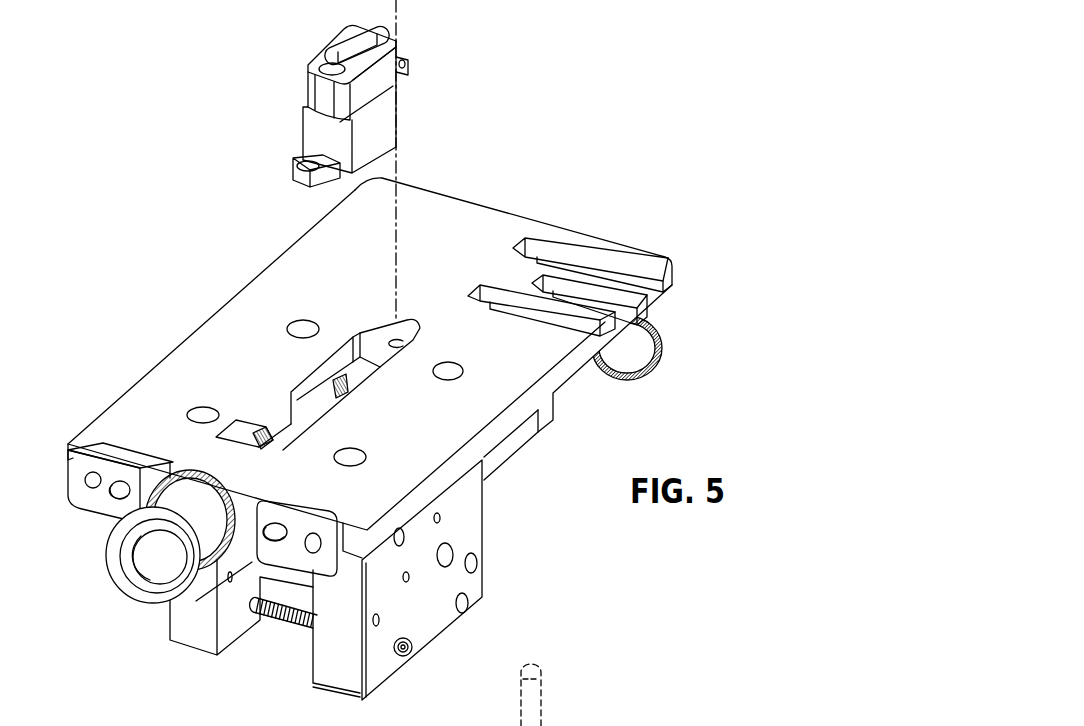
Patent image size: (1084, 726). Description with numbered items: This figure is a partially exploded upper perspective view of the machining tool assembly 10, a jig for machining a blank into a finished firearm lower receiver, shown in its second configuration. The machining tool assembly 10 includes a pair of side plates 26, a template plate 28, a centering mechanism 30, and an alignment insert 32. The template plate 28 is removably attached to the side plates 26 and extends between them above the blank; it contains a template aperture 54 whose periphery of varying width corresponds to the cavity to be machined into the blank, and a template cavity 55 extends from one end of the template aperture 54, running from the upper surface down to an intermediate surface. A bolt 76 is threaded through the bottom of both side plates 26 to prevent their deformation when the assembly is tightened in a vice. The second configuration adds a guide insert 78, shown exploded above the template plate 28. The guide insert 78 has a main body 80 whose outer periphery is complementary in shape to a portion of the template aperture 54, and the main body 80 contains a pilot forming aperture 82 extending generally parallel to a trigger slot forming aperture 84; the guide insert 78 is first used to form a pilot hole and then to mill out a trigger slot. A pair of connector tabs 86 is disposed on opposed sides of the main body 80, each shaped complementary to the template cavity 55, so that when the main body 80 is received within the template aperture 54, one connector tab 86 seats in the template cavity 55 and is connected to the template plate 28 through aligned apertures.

The machining tool assembly 10 is at (590, 82).
The side plate 26 is at (185, 653).
The template plate 28 is at (226, 306).
The centering mechanism 30 is at (297, 547).
The alignment insert 32 is at (128, 600).
The template aperture 54 is at (340, 362).
The template cavity 55 is at (392, 318).
The bolt 76 is at (489, 569).
The guide insert 78 is at (311, 44).
The main body 80 is at (377, 85).
The pilot forming aperture 82 is at (320, 67).
The trigger slot forming aperture 84 is at (358, 47).
The connector tab 86 is at (408, 65).